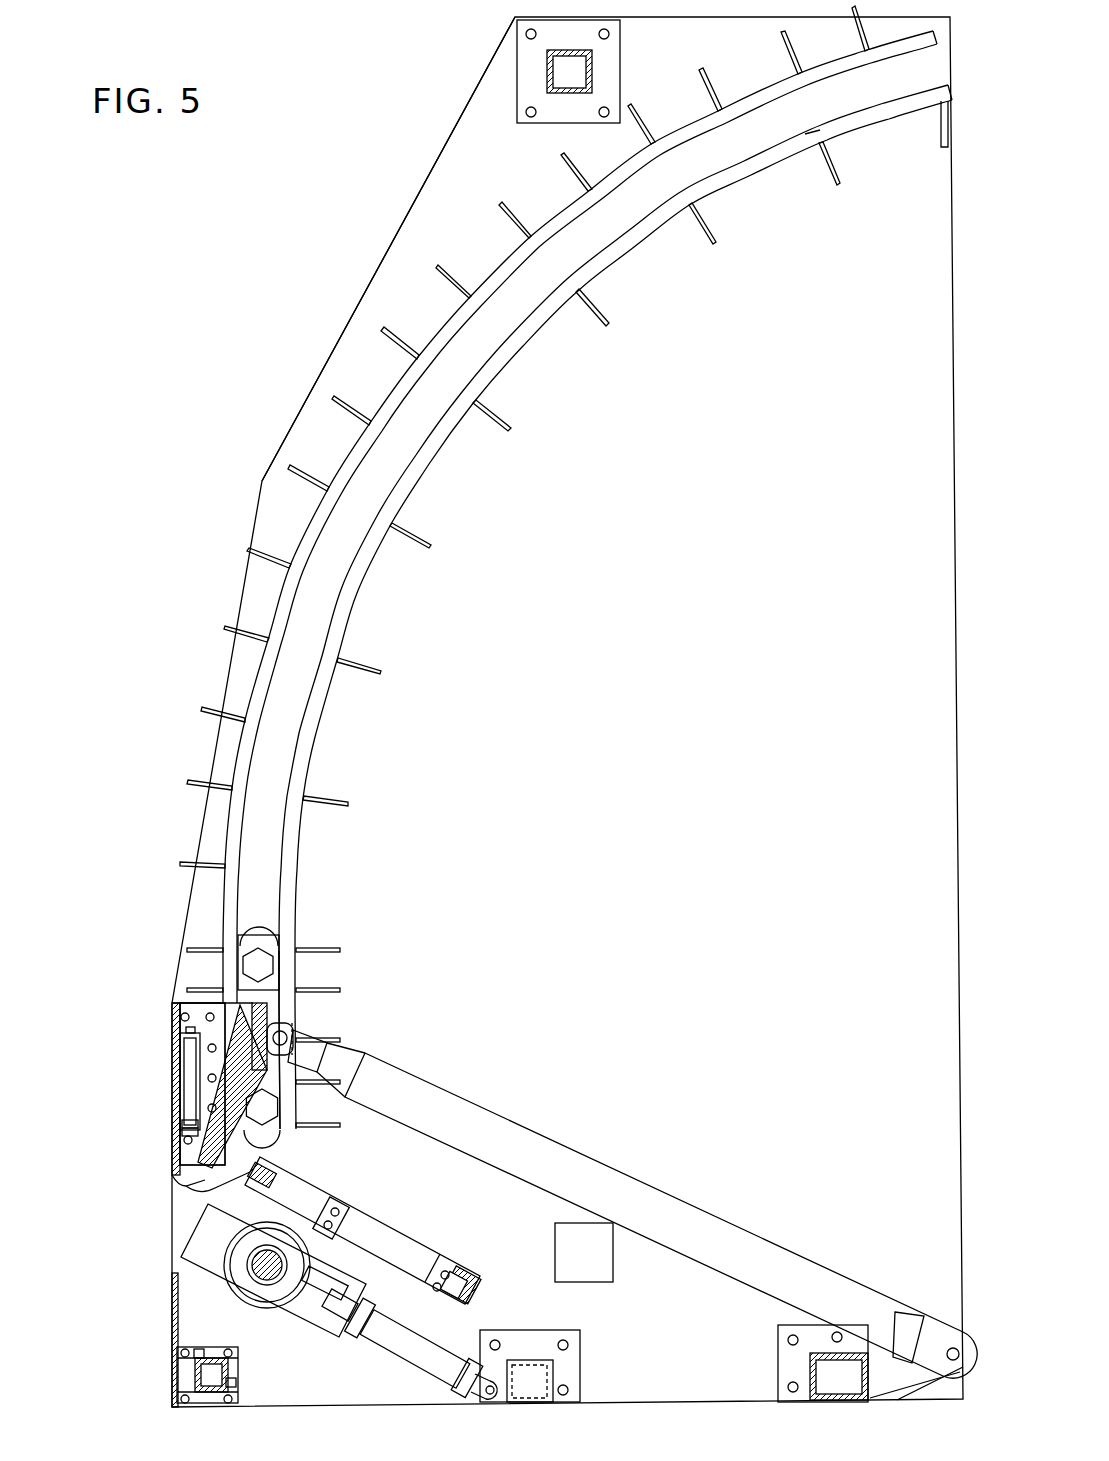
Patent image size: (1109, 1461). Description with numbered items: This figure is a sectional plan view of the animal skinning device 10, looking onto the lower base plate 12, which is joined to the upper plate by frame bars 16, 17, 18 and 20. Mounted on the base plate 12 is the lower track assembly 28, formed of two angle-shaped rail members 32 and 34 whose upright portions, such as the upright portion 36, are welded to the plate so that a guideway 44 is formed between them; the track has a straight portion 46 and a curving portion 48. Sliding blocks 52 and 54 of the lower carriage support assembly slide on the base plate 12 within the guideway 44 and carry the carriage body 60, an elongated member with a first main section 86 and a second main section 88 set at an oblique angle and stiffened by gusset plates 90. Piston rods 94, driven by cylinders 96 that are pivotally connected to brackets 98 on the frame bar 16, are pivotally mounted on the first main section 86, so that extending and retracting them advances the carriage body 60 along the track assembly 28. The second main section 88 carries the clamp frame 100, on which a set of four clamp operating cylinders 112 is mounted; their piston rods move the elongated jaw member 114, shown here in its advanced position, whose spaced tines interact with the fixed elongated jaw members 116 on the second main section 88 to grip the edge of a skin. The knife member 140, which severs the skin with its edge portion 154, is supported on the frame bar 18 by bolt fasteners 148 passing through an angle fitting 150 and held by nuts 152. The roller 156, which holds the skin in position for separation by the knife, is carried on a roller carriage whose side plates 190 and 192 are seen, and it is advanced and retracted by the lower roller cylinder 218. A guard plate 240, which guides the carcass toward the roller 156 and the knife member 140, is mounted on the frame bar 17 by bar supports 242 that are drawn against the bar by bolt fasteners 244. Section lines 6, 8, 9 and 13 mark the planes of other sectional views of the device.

The animal skinning device 10 is at (330, 345).
The lower base plate 12 is at (826, 818).
The frame bar 16 is at (810, 1376).
The frame bar 17 is at (178, 1372).
The frame bar 18 is at (178, 1048).
The frame bar 20 is at (547, 70).
The lower track assembly 28 is at (448, 459).
The rail member 32 is at (492, 260).
The rail member 34 is at (651, 244).
The upright portion 36 is at (363, 660).
The guideway 44 is at (270, 832).
The straight portion 46 is at (366, 970).
The curving portion 48 is at (637, 323).
The sliding block 52 is at (283, 1120).
The sliding block 54 is at (275, 948).
The carriage body 60 is at (305, 1035).
The first main section 86 is at (276, 1012).
The second main section 88 is at (276, 1095).
The gusset plates 90 is at (330, 1052).
The piston rods 94 is at (353, 1070).
The cylinders 96 is at (522, 1142).
The brackets 98 is at (900, 1335).
The clamp frame 100 is at (470, 1276).
The clamp operating cylinders 112 is at (372, 1236).
The jaw member 114 is at (283, 1163).
The elongated jaw members 116 is at (183, 1189).
The knife member 140 is at (168, 991).
The bolt fasteners 148 is at (192, 1072).
The angle fitting 150 is at (192, 1127).
The nuts 152 is at (188, 1113).
The edge portion 154 is at (173, 1178).
The roller 156 is at (236, 1292).
The side plate 190 is at (300, 1326).
The side plate 192 is at (340, 1278).
The lower roller cylinder 218 is at (425, 1368).
The guard plate 240 is at (176, 1340).
The bar supports 242 is at (200, 1350).
The bolt fasteners 244 is at (230, 1370).
The section line 6- 6 is at (175, 1251).
The section line 8- 8 is at (152, 1137).
The section line 9- 9 is at (180, 918).
The section line 13- 13 is at (143, 1000).